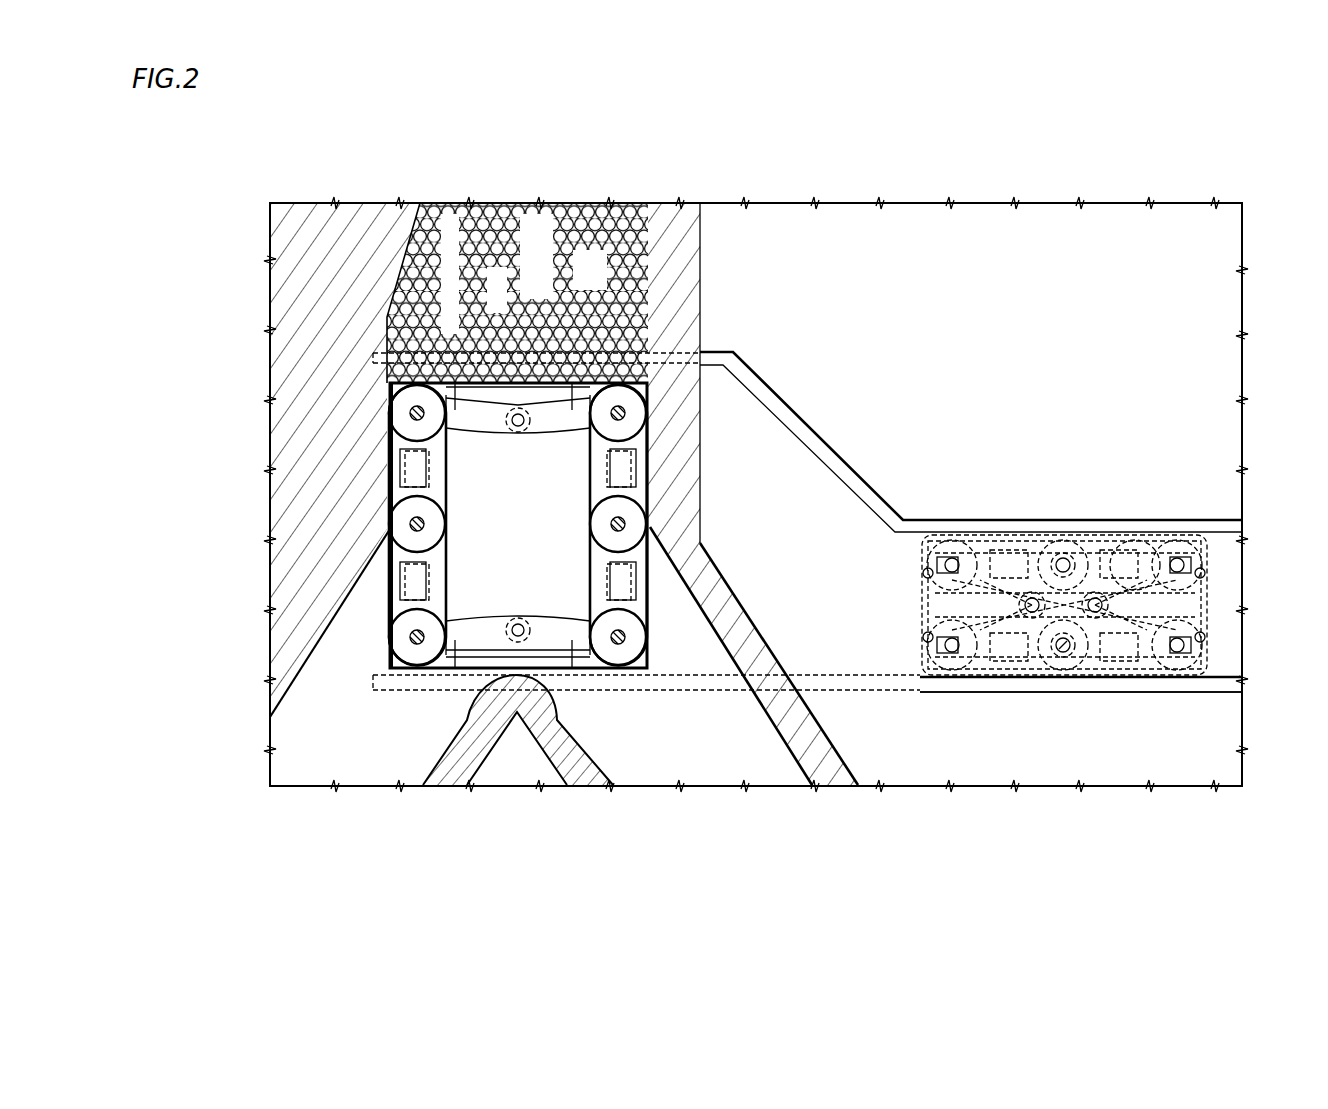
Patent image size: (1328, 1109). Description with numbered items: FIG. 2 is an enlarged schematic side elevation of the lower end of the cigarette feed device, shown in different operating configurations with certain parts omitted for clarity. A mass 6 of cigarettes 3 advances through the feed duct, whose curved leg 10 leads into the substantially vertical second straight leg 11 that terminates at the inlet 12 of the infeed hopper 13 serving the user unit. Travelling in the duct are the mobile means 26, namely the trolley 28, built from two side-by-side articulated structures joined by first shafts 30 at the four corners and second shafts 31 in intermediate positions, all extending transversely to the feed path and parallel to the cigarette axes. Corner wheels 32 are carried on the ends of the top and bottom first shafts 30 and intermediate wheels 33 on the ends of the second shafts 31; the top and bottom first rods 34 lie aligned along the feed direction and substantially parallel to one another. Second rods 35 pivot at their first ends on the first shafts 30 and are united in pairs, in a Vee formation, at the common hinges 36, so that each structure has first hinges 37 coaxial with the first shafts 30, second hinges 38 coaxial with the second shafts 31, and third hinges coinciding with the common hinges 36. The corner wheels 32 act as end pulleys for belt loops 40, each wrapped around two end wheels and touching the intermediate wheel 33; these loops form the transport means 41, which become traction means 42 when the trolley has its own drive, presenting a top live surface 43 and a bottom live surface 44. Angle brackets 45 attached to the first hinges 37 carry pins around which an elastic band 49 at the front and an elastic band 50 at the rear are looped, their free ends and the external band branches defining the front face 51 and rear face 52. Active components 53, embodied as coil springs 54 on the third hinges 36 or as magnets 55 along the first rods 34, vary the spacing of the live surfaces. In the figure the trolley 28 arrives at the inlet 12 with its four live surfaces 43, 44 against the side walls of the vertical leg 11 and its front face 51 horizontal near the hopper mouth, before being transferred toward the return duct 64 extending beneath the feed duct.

The cigarettes 3 is at (562, 235).
The mass of cigarettes 6 is at (460, 246).
The curved leg 10 is at (392, 270).
The second straight leg 11 is at (706, 246).
The inlet 12 is at (393, 677).
The infeed hopper 13 is at (846, 750).
The mobile means 26 is at (367, 625).
The trolley 28 is at (378, 572).
The first shafts 30 is at (620, 385).
The second shafts 31 is at (417, 524).
The wheels 32 is at (392, 400).
The wheels 33 is at (393, 500).
The first rods 34 is at (384, 427).
The second rods 35 is at (430, 375).
The common hinges 36 is at (518, 408).
The first hinges 37 is at (945, 545).
The second hinges 38 is at (1063, 540).
The belt loops 40 is at (586, 503).
The transport means 41 is at (378, 633).
The traction means 42 is at (450, 553).
The top live surface 43 is at (417, 413).
The bottom live surface 44 is at (648, 392).
The angle brackets 45 is at (920, 537).
The elastic band 49 is at (425, 684).
The elastic band 50 is at (394, 300).
The front face 51 is at (603, 678).
The rear face 52 is at (392, 280).
The active components 53 is at (413, 447).
The coil springs 54 is at (519, 433).
The magnets 55 is at (398, 466).
The return duct 64 is at (1208, 696).